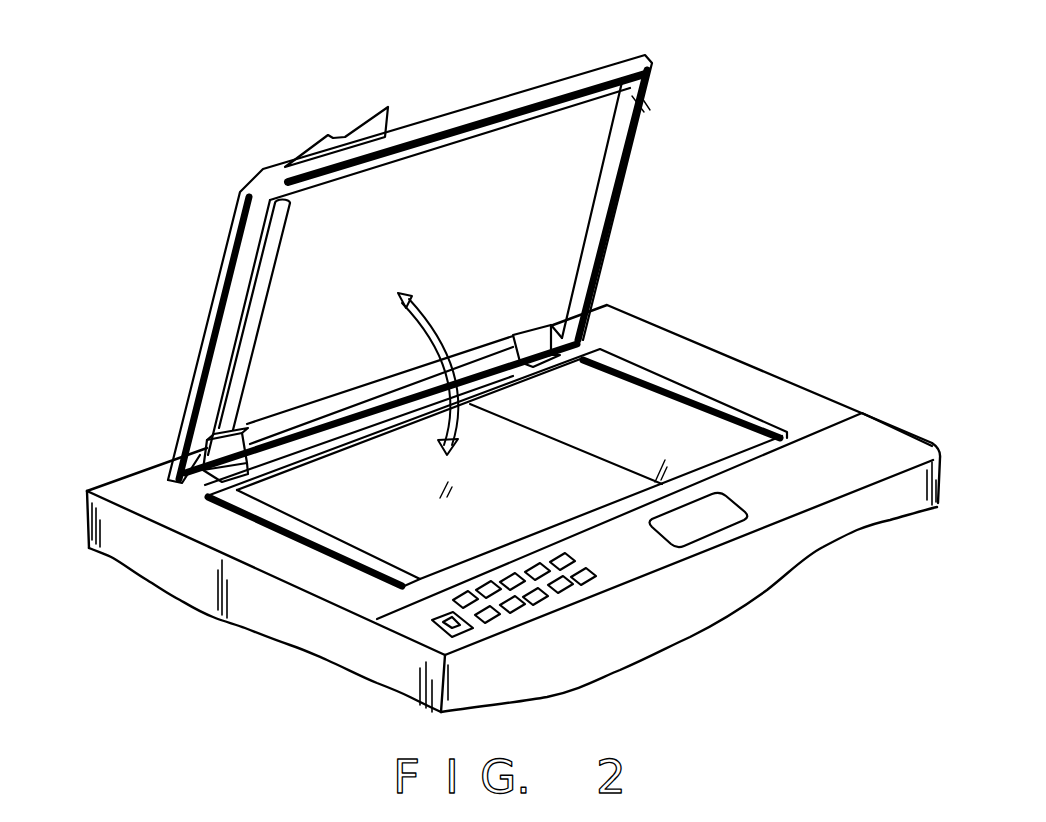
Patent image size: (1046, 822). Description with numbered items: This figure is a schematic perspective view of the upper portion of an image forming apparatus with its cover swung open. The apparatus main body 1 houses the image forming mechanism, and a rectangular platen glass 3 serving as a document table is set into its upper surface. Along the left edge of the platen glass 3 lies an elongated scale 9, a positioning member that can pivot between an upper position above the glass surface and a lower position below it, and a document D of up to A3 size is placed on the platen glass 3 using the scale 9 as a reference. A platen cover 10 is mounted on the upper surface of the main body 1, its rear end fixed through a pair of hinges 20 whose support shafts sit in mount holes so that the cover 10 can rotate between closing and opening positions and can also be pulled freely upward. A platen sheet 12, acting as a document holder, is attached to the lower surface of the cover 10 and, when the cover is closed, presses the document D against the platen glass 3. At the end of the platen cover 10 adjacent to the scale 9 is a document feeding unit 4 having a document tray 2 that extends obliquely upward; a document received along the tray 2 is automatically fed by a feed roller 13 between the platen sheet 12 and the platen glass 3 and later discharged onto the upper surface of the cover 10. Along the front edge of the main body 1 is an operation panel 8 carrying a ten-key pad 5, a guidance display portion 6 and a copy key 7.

The apparatus main body 1 is at (912, 432).
The document tray 2 is at (318, 140).
The platen glass 3 is at (668, 445).
The document feeding unit 4 is at (420, 261).
The ten-key pad 5 is at (535, 595).
The guidance display portion 6 is at (705, 522).
The copy key 7 is at (462, 628).
The operation panel 8 is at (642, 565).
The scale 9 is at (318, 543).
The platen cover 10 is at (568, 85).
The platen sheet 12 is at (583, 218).
The feed roller 13 is at (257, 283).
The hinges 20 is at (260, 467).
The document D is at (607, 478).